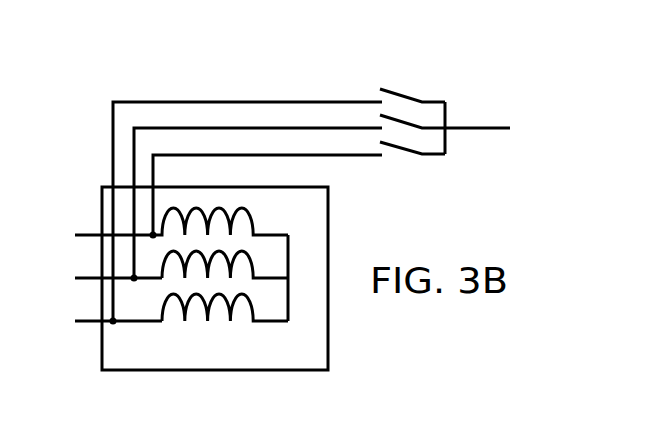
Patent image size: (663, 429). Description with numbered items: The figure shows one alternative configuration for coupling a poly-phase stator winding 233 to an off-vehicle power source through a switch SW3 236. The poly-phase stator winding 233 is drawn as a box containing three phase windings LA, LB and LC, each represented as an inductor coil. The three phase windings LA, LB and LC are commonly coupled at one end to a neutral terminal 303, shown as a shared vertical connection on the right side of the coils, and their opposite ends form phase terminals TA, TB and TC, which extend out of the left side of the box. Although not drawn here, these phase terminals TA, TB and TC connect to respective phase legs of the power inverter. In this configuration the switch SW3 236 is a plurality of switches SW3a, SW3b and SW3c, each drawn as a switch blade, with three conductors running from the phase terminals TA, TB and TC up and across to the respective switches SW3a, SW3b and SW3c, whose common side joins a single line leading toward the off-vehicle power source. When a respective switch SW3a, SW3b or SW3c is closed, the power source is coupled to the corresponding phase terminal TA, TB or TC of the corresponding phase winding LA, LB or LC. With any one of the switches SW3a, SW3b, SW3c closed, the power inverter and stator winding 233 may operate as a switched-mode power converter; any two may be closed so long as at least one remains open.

The switch SW3 236 is at (426, 113).
The switch SW3a is at (398, 165).
The switch SW3b is at (410, 110).
The switch SW3c is at (410, 80).
The poly-phase stator winding 233 is at (200, 370).
The neutral terminal 303 is at (290, 258).
The phase winding LA is at (220, 221).
The phase winding LB is at (225, 264).
The phase winding LC is at (225, 307).
The phase terminal TA is at (102, 236).
The phase terminal TB is at (106, 279).
The phase terminal TC is at (106, 322).